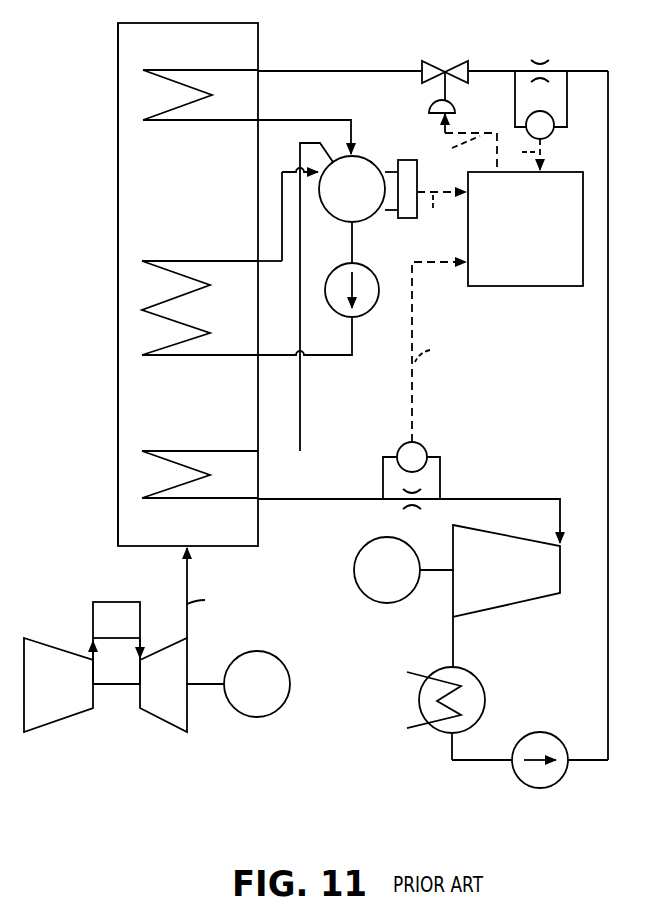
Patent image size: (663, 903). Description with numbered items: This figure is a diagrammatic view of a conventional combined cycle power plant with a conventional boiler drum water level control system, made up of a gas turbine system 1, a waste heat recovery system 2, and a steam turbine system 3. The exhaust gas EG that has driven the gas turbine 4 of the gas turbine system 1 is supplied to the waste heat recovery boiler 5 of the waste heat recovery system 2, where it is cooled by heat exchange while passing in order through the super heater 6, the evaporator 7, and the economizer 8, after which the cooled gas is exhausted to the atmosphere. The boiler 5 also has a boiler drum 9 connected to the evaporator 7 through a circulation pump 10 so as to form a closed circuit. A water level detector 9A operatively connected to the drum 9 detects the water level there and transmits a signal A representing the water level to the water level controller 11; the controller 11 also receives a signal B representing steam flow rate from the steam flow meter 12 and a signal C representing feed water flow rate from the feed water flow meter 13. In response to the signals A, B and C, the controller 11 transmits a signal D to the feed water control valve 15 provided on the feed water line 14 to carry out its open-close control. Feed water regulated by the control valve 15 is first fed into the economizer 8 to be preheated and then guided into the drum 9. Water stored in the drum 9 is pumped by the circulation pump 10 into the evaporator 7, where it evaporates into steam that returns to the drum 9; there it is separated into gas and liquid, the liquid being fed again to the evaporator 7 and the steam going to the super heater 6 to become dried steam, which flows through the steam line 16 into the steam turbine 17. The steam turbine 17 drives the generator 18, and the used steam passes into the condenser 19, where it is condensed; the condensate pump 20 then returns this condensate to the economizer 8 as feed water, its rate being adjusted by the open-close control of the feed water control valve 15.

The gas turbine system 1 is at (157, 684).
The waste heat recovery system 2 is at (108, 194).
The steam turbine system 3 is at (486, 779).
The gas turbine 4 is at (157, 718).
The waste heat recovery boiler 5 is at (118, 278).
The super heater 6 is at (172, 500).
The evaporator 7 is at (183, 357).
The economizer 8 is at (185, 122).
The boiler drum 9 is at (364, 158).
The water level detector 9A is at (404, 220).
The circulation pump 10 is at (366, 311).
The water level controller 11 is at (525, 287).
The steam flow meter 12 is at (425, 448).
The feed water flow meter 13 is at (551, 134).
The feed water line 14 is at (336, 68).
The feed water control valve 15 is at (454, 62).
The steam line 16 is at (329, 497).
The steam turbine 17 is at (510, 606).
The generator 18 is at (353, 569).
The condenser 19 is at (486, 700).
The condensate pump 20 is at (541, 788).
The signal representing water level A is at (441, 213).
The signal representing steam flow rate B is at (439, 352).
The signal representing feed water flow rate C is at (523, 154).
The signal to feed water control valve D is at (466, 152).
The exhaust gas EG is at (212, 593).